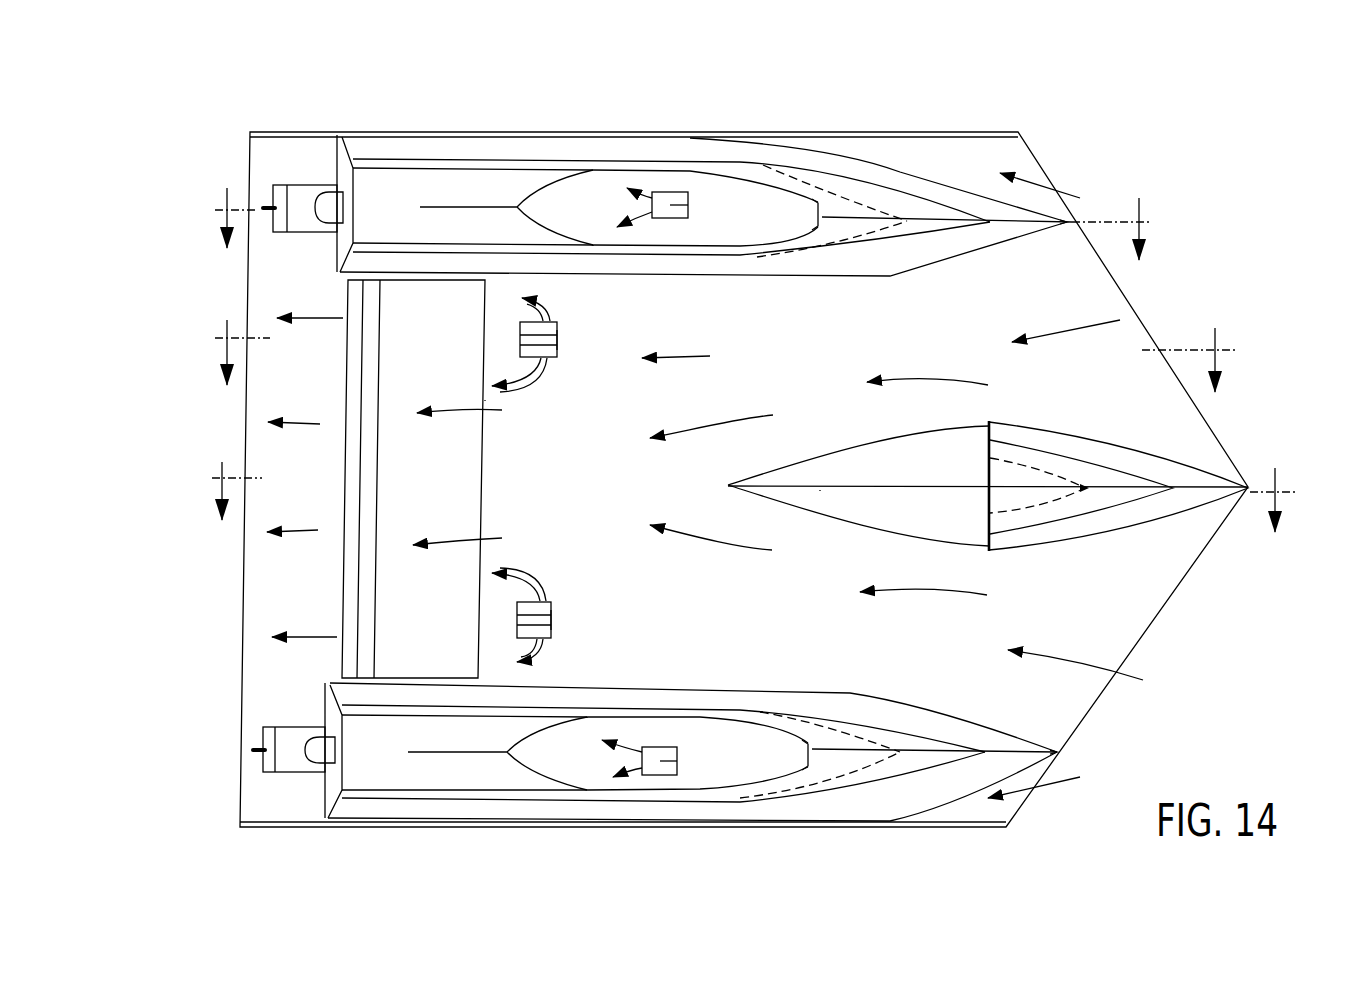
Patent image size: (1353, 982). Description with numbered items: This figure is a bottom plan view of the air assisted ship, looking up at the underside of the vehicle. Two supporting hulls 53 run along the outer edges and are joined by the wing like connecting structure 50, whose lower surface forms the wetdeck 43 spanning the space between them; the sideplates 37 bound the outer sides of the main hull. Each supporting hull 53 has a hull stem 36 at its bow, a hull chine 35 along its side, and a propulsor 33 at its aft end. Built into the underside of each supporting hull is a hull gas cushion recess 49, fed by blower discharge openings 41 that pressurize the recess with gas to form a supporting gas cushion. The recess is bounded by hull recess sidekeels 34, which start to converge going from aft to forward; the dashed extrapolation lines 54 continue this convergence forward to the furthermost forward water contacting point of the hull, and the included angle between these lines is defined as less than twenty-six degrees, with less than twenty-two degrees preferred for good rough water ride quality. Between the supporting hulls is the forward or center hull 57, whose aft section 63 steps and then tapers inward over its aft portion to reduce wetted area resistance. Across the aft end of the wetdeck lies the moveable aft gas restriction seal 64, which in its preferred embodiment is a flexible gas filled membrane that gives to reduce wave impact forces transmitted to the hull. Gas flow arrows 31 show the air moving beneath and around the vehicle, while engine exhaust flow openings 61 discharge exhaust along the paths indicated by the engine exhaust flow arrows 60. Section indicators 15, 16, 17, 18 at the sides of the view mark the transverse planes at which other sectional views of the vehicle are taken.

The section line 15- 15 is at (677, 234).
The section line 16- 16 is at (715, 365).
The section line 17- 17 is at (742, 507).
The section line 18- 18 is at (715, 365).
The gas flow arrows 31 is at (318, 420).
The propulsor 33 is at (313, 233).
The hull recess sidekeel 34 is at (663, 256).
The hull chine 35 is at (625, 256).
The hull stem 36 is at (950, 222).
The sideplates 37 is at (757, 132).
The blower discharge openings 41 is at (690, 200).
The wetdeck 43 is at (637, 583).
The hull gas cushion recesses 49 is at (767, 224).
The wing like connecting structure 50 is at (804, 578).
The supporting hulls 53 is at (740, 280).
The extrapolation lines 54 is at (858, 240).
The center hull 57 is at (1152, 517).
The engine exhaust flow arrows 60 is at (548, 365).
The engine exhaust flow openings 61 is at (557, 343).
The aft section of center bow 63 is at (927, 468).
The aft gas restriction seal 64 is at (411, 647).